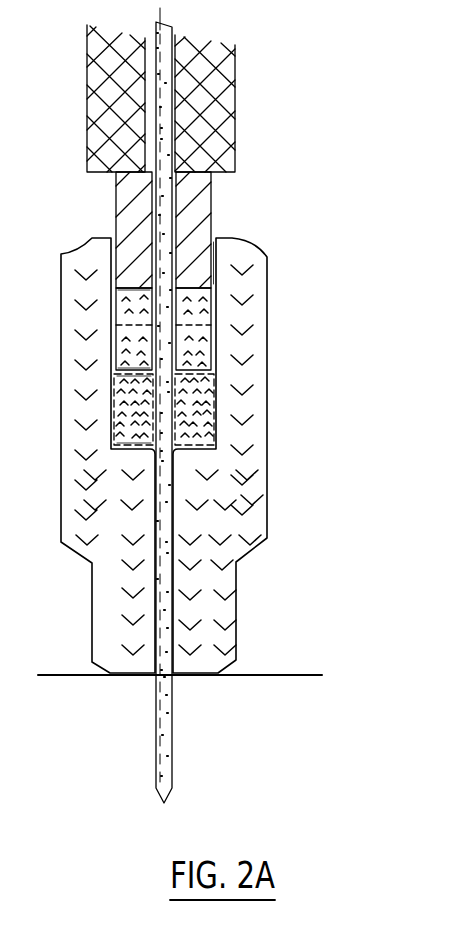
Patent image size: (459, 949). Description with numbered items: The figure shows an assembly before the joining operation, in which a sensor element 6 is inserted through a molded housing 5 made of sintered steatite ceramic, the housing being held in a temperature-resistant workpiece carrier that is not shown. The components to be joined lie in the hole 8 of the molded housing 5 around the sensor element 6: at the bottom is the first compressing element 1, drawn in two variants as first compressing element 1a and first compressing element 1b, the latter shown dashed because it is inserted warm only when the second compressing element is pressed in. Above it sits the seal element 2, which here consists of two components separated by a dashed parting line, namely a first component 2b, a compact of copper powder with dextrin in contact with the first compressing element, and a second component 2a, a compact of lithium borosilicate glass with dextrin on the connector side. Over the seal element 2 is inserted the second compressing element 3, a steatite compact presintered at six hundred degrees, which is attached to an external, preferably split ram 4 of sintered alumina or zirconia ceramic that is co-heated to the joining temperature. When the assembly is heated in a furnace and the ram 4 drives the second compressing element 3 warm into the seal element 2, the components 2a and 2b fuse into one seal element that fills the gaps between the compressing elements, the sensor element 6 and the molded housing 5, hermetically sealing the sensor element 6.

The first compressing element 1 is at (352, 385).
The first compressing element 1a is at (203, 408).
The first compressing element 1b is at (230, 446).
The seal element 2 is at (342, 300).
The second component of seal element 2a is at (200, 325).
The first component of seal element 2b is at (226, 356).
The second compressing element 3 is at (211, 207).
The ram 4 is at (235, 83).
The molded housing 5 is at (267, 498).
The sensor element 6 is at (172, 728).
The hole 8 is at (218, 270).